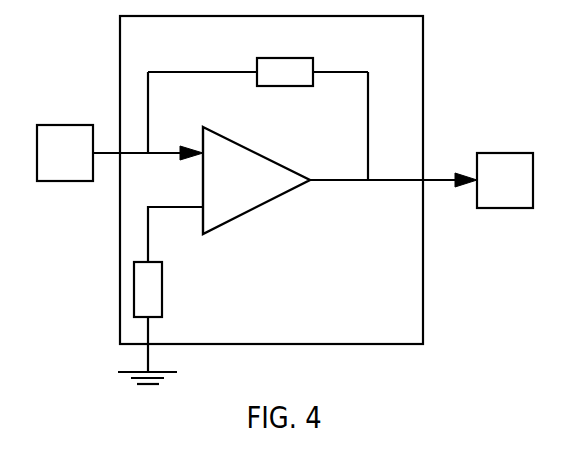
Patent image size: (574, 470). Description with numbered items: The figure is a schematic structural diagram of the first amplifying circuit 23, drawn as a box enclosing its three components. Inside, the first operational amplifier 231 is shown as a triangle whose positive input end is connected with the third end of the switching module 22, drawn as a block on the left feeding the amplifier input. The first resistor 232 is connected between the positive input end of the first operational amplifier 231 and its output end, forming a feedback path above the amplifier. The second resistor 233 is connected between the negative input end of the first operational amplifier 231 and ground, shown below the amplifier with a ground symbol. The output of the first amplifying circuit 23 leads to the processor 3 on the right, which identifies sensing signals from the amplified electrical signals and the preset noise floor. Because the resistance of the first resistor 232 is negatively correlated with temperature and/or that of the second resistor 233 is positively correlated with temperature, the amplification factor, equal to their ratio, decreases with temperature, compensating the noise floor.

The processor 3 is at (496, 193).
The switching module 22 is at (75, 170).
The first amplifying circuit 23 is at (357, 306).
The first operational amplifier 231 is at (255, 197).
The first resistor 232 is at (266, 57).
The second resistor 233 is at (174, 306).